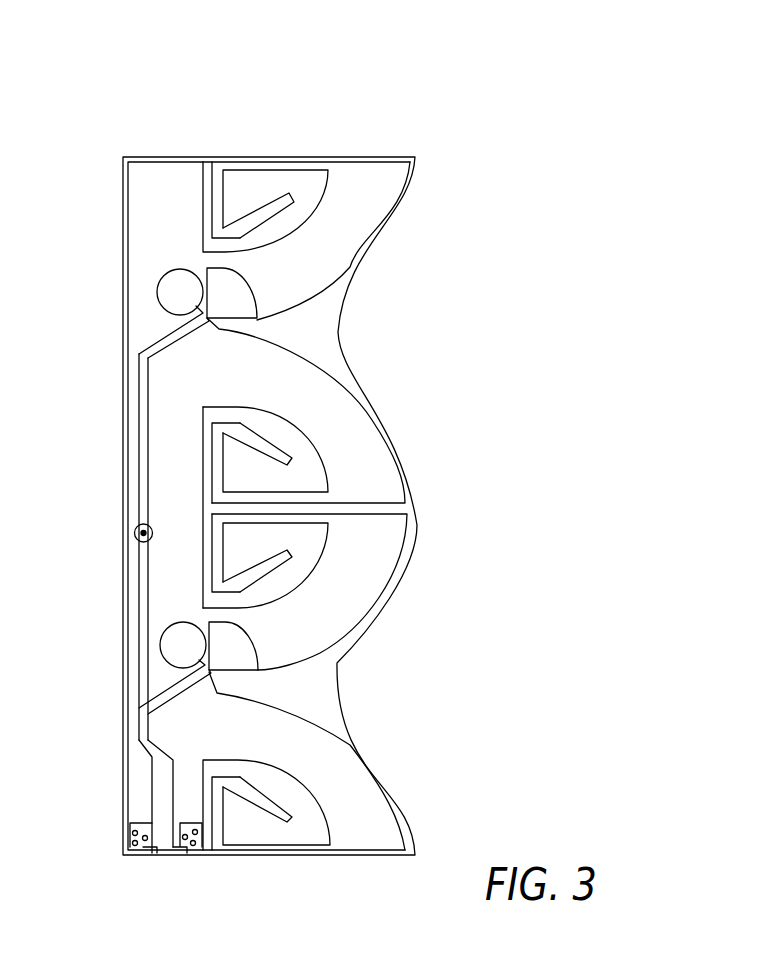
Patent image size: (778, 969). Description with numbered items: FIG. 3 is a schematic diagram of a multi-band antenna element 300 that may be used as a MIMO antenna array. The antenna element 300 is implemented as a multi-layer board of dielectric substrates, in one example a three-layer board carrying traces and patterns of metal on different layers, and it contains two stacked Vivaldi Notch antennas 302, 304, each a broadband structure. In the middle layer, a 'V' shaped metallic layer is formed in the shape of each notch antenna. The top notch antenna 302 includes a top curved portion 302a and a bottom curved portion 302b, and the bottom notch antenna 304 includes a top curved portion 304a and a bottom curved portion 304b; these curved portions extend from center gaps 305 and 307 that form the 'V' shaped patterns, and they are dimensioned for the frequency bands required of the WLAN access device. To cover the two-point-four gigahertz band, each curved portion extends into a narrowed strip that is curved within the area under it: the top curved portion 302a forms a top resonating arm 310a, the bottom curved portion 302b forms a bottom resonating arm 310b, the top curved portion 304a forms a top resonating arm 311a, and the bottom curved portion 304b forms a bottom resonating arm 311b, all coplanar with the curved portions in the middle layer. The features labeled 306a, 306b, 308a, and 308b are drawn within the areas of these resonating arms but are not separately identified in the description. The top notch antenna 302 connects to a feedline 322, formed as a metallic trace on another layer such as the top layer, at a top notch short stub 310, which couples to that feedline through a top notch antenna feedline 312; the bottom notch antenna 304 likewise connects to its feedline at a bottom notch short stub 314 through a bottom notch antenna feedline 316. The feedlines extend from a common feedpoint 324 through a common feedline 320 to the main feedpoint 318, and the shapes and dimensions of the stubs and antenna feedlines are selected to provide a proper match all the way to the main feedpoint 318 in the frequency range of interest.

The multi-band antenna element 300 is at (353, 92).
The top notch antenna 302 is at (359, 332).
The top curved portion 302a is at (352, 240).
The bottom curved portion 302b is at (367, 463).
The bottom notch antenna 304 is at (359, 682).
The top curved portion 304a is at (366, 600).
The bottom curved portion 304b is at (356, 782).
The center gap 305 is at (268, 330).
The center gap 307 is at (284, 687).
The slot 306a is at (248, 212).
The slot 306b is at (243, 468).
The slot 308a is at (246, 553).
The slot 308b is at (258, 798).
The top notch short stub 310 is at (145, 305).
The top 2.4 GHz resonating arm 310a is at (185, 171).
The bottom 2.4 GHz resonating arm 310b is at (258, 455).
The top 2.4 GHz resonating arm 311a is at (267, 561).
The bottom 2.4 GHz resonating arm 311b is at (266, 846).
The top notch antenna feedline 312 is at (222, 288).
The bottom notch short stub 314 is at (170, 648).
The bottom notch antenna feedline 316 is at (222, 634).
The main feedpoint 318 is at (162, 876).
The common feedline 320 is at (150, 756).
The feedline 322 is at (140, 410).
The common feedpoint 324 is at (130, 536).